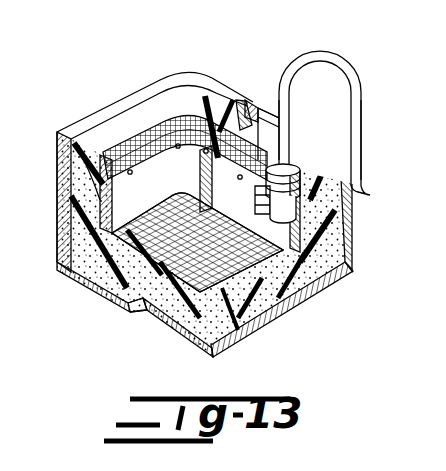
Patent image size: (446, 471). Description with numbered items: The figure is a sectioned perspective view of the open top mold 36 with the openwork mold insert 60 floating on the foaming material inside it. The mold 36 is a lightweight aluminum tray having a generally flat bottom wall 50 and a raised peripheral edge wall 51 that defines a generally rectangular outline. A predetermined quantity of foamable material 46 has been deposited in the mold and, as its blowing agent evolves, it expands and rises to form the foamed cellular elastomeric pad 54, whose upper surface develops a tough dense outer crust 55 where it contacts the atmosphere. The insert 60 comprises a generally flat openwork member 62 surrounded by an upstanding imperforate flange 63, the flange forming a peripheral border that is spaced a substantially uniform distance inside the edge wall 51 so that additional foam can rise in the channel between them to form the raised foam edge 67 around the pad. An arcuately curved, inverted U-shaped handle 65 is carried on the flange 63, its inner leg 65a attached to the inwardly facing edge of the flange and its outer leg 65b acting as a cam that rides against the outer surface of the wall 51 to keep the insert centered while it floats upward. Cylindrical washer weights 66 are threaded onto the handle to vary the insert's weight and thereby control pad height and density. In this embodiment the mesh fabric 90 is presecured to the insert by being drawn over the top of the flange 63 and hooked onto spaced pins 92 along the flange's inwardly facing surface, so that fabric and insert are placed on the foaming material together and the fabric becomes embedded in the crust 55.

The open top mold 36 is at (262, 341).
The foamable material 46 is at (322, 283).
The bottom wall 50 is at (305, 305).
The peripheral edge wall 51 is at (63, 212).
The foamed cellular elastomeric pad 54 is at (81, 281).
The dense outer crust 55 is at (143, 312).
The openwork mold insert 60 is at (213, 95).
The openwork member 62 is at (177, 327).
The imperforate flange 63 is at (71, 187).
The handle 65 is at (344, 52).
The inner leg 65a is at (281, 136).
The outer leg 65b is at (354, 132).
The weight 66 is at (307, 128).
The raised foam edge 67 is at (352, 190).
The mesh fabric 90 is at (200, 117).
The pins 92 is at (165, 122).